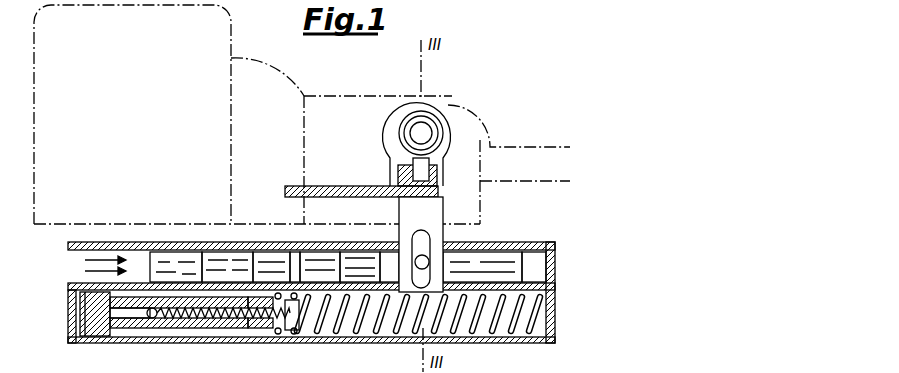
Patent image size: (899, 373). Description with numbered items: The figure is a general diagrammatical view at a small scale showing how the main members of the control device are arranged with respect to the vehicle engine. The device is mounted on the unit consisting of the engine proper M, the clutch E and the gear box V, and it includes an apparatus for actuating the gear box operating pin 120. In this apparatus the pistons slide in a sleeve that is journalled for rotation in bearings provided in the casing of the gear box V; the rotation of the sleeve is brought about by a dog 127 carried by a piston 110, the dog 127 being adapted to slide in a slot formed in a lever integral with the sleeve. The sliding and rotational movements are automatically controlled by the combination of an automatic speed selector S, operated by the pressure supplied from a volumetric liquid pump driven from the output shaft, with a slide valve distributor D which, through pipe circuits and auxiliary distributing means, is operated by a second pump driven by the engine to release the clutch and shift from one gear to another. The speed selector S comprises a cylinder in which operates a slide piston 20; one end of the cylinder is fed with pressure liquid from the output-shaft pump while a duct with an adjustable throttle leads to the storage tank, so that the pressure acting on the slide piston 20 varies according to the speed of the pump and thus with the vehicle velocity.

The slide piston 20 is at (98, 322).
The piston 110 is at (175, 260).
The gear box operating pin 120 is at (412, 162).
The dog 127 is at (430, 260).
The engine M is at (203, 48).
The clutch E is at (273, 88).
The gear box V is at (353, 112).
The slide valve distributor D is at (557, 258).
The automatic speed selector S is at (557, 316).